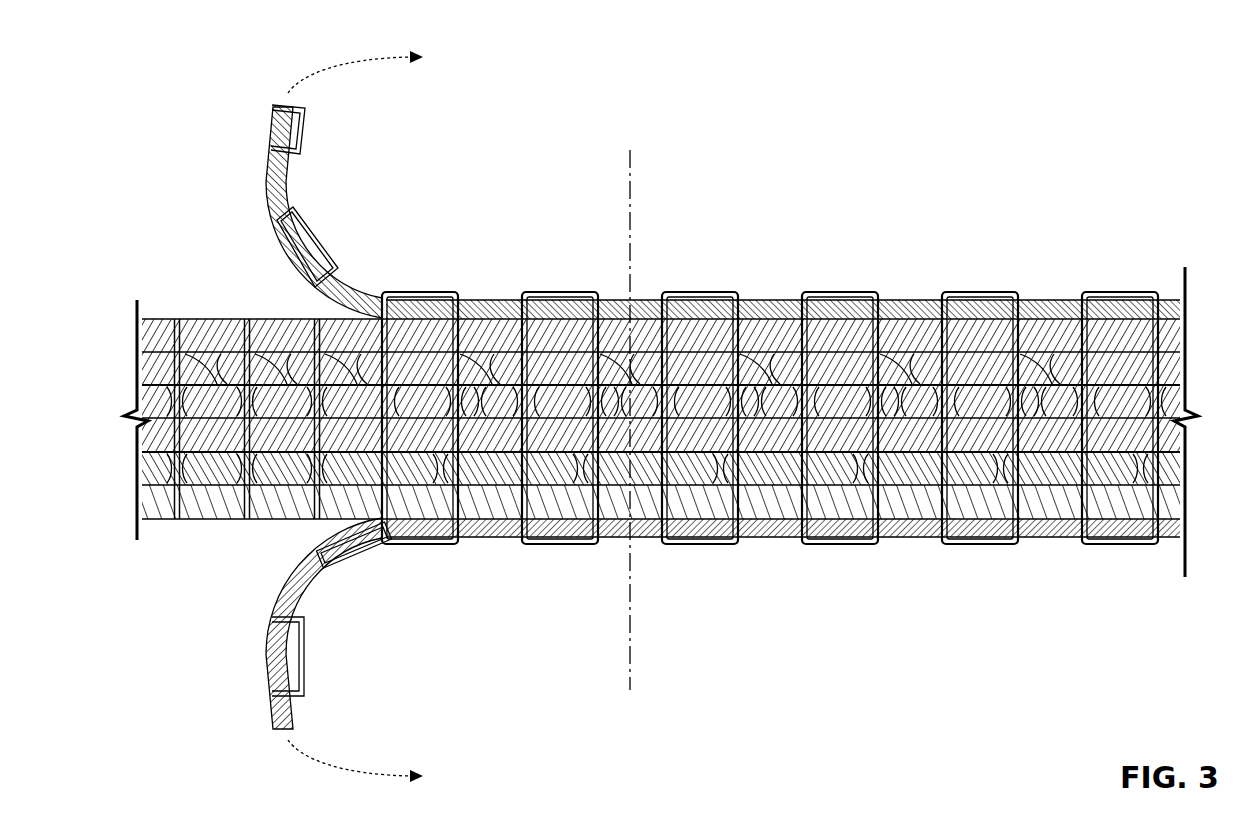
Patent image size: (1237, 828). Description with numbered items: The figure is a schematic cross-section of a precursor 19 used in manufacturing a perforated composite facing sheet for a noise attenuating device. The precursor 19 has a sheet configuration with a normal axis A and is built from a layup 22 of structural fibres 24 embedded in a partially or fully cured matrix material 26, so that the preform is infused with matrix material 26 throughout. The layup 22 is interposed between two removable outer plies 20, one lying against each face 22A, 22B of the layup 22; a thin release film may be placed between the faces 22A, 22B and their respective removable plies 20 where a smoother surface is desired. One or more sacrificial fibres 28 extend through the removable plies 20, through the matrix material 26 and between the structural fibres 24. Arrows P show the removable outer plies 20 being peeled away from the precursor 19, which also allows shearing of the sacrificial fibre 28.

The precursor 19 is at (198, 115).
The removable outer plies 20 is at (270, 130).
The layup 22 is at (205, 183).
The face of the layup 22A is at (283, 318).
The face of the layup 22B is at (198, 522).
The structural fibres 24 is at (212, 387).
The matrix material 26 is at (322, 390).
The sacrificial fibre 28 is at (444, 292).